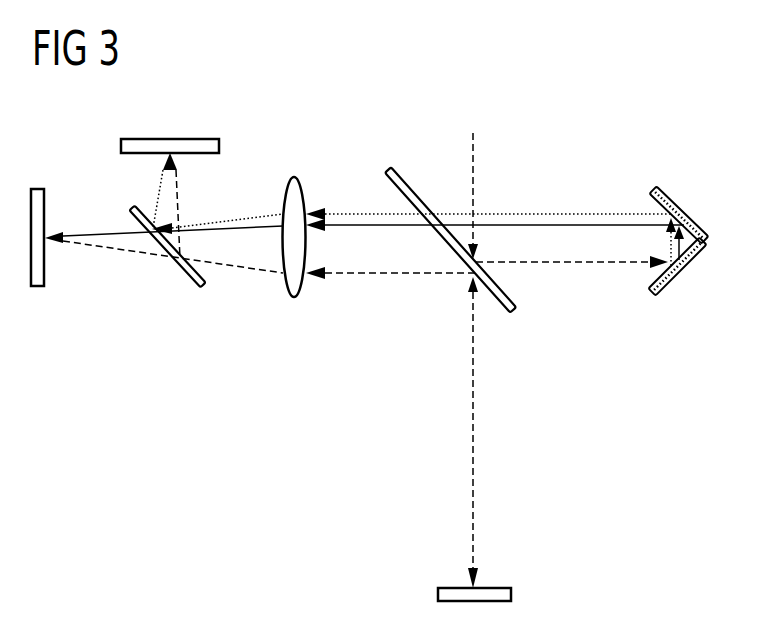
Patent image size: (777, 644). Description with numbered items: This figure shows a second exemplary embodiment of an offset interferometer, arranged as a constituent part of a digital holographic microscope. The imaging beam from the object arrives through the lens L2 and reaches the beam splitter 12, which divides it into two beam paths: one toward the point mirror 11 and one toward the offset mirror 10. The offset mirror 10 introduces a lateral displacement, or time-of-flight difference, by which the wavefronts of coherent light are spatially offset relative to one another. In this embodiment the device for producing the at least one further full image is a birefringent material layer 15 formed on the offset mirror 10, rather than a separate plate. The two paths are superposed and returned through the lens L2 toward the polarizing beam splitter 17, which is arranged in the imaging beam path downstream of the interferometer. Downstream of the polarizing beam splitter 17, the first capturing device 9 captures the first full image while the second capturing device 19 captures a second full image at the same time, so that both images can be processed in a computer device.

The capturing device 9 is at (36, 189).
The second capturing device 19 is at (171, 139).
The polarizing beam splitter 17 is at (203, 286).
The lens L2 is at (294, 177).
The beam splitter 12 is at (513, 311).
The offset mirror 10 is at (669, 204).
The birefringent material layer 15 is at (650, 283).
The point mirror 11 is at (498, 588).